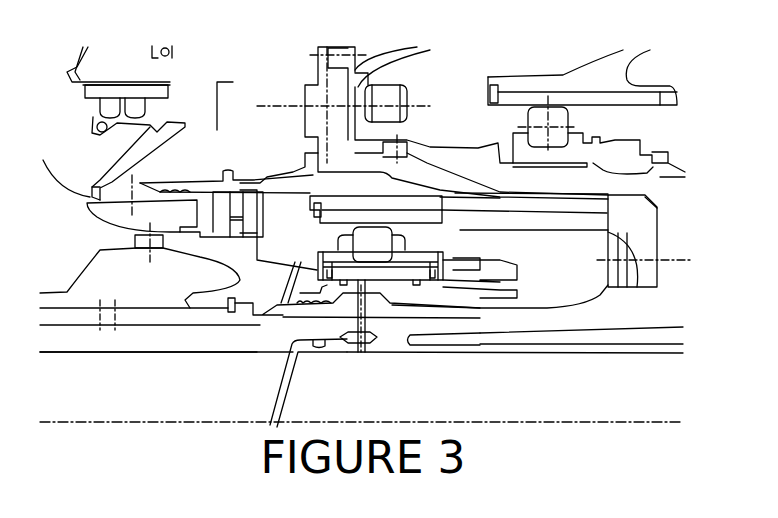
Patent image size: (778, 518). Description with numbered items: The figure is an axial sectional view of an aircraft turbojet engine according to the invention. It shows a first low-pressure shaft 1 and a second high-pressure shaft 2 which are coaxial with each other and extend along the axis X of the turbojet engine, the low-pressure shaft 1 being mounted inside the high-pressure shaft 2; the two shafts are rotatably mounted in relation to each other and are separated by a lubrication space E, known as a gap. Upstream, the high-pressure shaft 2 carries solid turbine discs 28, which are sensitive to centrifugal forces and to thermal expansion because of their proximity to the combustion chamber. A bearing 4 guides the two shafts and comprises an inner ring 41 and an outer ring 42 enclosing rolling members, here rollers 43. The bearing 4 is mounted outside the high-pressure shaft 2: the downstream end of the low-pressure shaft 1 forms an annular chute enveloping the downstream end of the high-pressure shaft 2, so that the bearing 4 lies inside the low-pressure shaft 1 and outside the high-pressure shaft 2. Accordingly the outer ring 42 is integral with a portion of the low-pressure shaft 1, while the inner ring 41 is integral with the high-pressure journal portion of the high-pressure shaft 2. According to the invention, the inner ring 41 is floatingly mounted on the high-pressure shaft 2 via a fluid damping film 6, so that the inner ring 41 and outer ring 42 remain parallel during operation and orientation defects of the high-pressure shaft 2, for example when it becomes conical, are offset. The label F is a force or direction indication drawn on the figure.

The low-pressure shaft 1 is at (257, 342).
The high-pressure shaft 2 is at (500, 308).
The bearing 4 is at (413, 238).
The fluid damping film 6 is at (415, 283).
The solid turbine discs 28 is at (78, 240).
The inner ring 41 is at (443, 250).
The outer ring 42 is at (427, 222).
The rollers 43 is at (353, 232).
The force direction F is at (360, 353).
The lubrication space E is at (448, 305).
The axis X is at (373, 421).